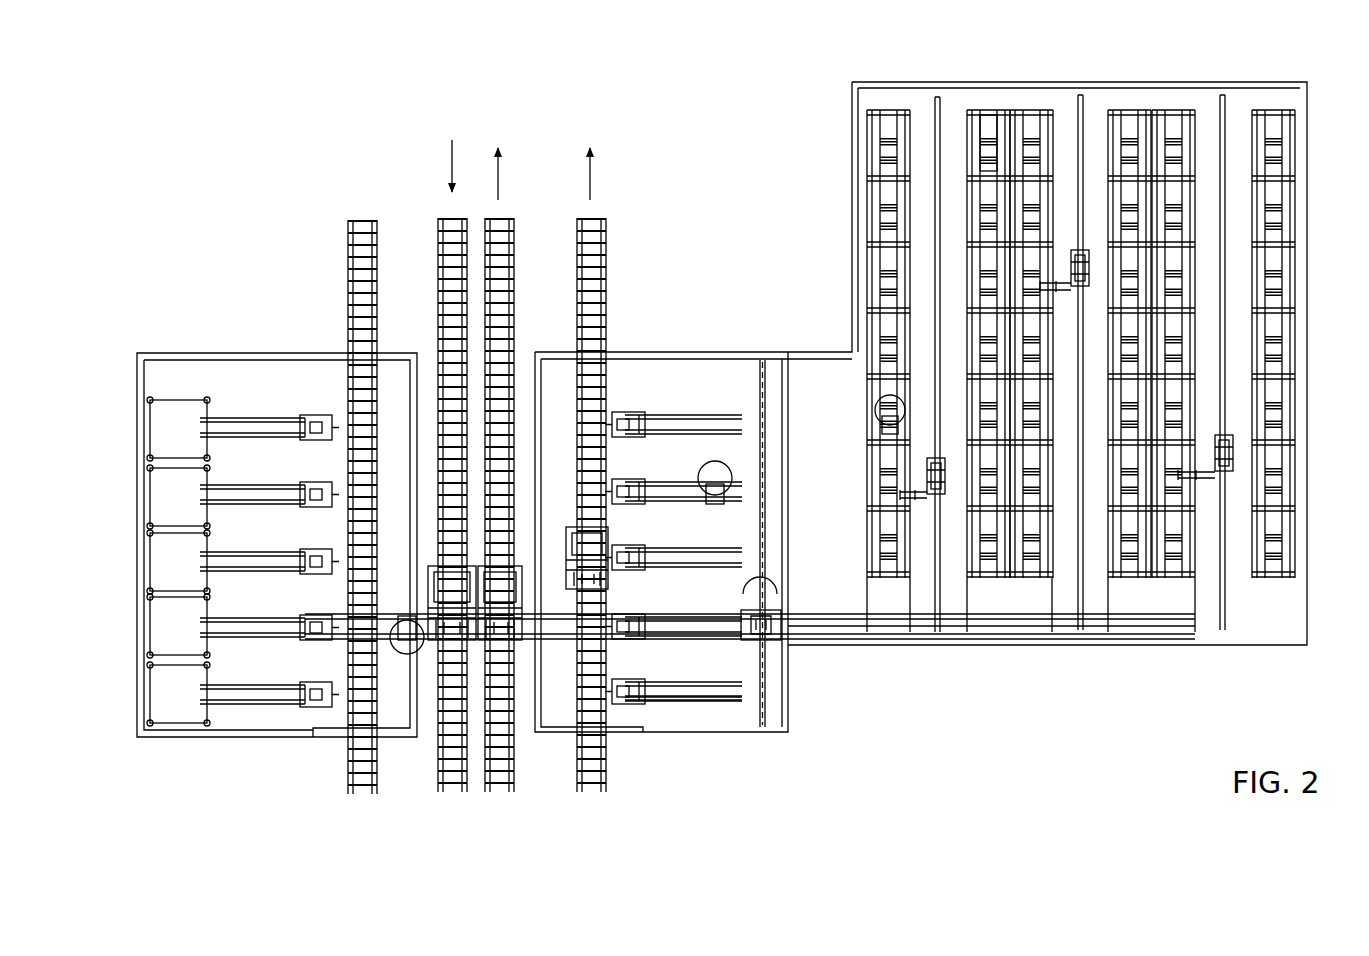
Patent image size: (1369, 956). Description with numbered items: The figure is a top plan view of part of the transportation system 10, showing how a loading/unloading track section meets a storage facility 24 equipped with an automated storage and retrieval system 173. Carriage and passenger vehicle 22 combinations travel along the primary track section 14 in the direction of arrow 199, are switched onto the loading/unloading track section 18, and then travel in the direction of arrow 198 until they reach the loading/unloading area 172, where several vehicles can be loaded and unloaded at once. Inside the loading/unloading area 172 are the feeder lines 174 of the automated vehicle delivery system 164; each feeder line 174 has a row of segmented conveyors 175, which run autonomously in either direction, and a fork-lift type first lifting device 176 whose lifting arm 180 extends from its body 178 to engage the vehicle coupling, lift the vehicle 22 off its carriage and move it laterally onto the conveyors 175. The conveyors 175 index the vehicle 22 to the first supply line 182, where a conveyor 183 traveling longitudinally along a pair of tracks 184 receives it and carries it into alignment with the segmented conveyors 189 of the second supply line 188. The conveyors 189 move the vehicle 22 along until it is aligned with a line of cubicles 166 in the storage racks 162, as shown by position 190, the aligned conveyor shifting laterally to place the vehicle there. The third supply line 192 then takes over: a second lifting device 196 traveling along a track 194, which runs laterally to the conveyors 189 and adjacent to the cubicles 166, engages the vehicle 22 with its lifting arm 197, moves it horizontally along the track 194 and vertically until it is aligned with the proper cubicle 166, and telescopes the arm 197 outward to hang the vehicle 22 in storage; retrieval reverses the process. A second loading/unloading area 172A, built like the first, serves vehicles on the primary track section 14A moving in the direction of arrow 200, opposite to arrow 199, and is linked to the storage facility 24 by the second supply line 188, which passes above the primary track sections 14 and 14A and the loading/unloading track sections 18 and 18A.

The transportation system 10 is at (772, 102).
The primary track section 14 is at (512, 775).
The primary track section 14A is at (466, 779).
The loading/unloading track section 18 is at (606, 779).
The loading/unloading track section 18A is at (376, 779).
The passenger vehicle 22 is at (875, 404).
The storage facility 24 is at (1071, 363).
The storage rack 162 is at (1003, 101).
The automated vehicle delivery system 164 is at (822, 706).
The cubicle 166 is at (975, 138).
The loading/unloading area 172 is at (693, 428).
The second loading/unloading area 172A is at (262, 312).
The automated storage and retrieval system 173 is at (813, 244).
The feeder line 174 is at (712, 398).
The segmented conveyor 175 is at (720, 705).
The first lifting device 176 is at (632, 398).
The body 178 is at (645, 693).
The lifting arm 180 is at (615, 700).
The first supply line 182 is at (786, 364).
The conveyor 183 is at (769, 595).
The track 184 is at (770, 358).
The second supply line 188 is at (1003, 646).
The segmented conveyor 189 is at (1110, 634).
The position 190 is at (893, 624).
The third supply line 192 is at (946, 606).
The track 194 is at (1228, 595).
The second lifting device 196 is at (1238, 442).
The lifting arm 197 is at (1205, 478).
The arrow 198 is at (590, 188).
The arrow 199 is at (498, 188).
The arrow 200 is at (452, 162).